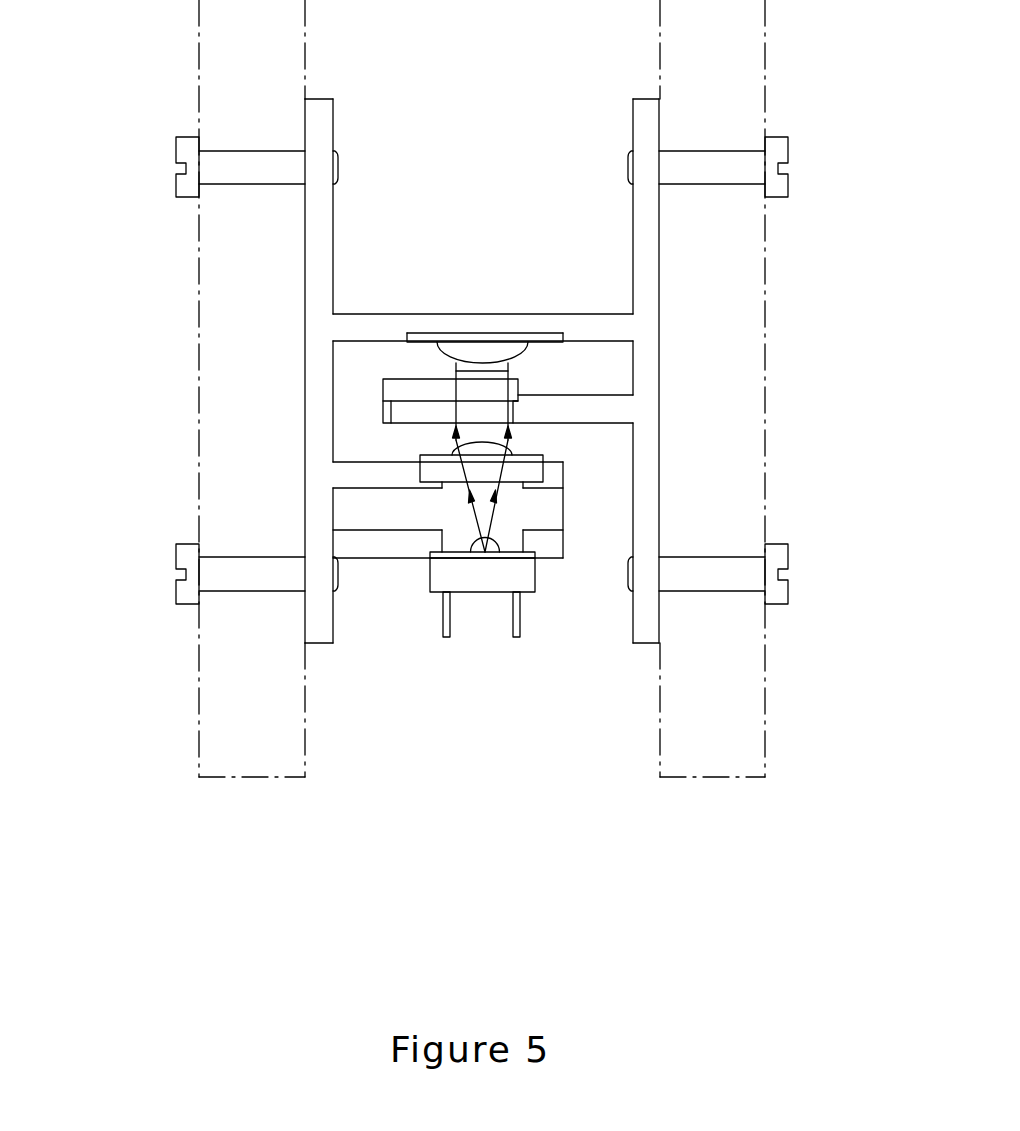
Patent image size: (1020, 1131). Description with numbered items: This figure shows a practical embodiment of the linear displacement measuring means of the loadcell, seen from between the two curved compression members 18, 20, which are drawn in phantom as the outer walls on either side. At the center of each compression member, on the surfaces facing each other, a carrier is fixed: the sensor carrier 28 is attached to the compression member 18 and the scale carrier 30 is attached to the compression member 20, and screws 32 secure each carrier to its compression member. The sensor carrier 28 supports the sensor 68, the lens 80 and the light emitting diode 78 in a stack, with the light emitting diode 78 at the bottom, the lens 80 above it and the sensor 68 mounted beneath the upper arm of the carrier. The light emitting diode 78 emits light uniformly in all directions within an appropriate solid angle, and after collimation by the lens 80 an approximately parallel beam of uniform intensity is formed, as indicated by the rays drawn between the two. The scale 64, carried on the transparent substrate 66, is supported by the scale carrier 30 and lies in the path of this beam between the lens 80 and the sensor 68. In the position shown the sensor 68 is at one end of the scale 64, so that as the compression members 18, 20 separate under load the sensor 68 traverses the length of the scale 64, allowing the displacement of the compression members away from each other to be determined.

The compression member 18 is at (194, 367).
The compression member 20 is at (770, 360).
The sensor carrier 28 is at (389, 306).
The scale carrier 30 is at (628, 235).
The screws 32 is at (176, 148).
The scale 64 is at (410, 377).
The transparent substrate 66 is at (527, 383).
The sensor 68 is at (564, 337).
The light emitting diode 78 is at (526, 597).
The lens 80 is at (548, 455).